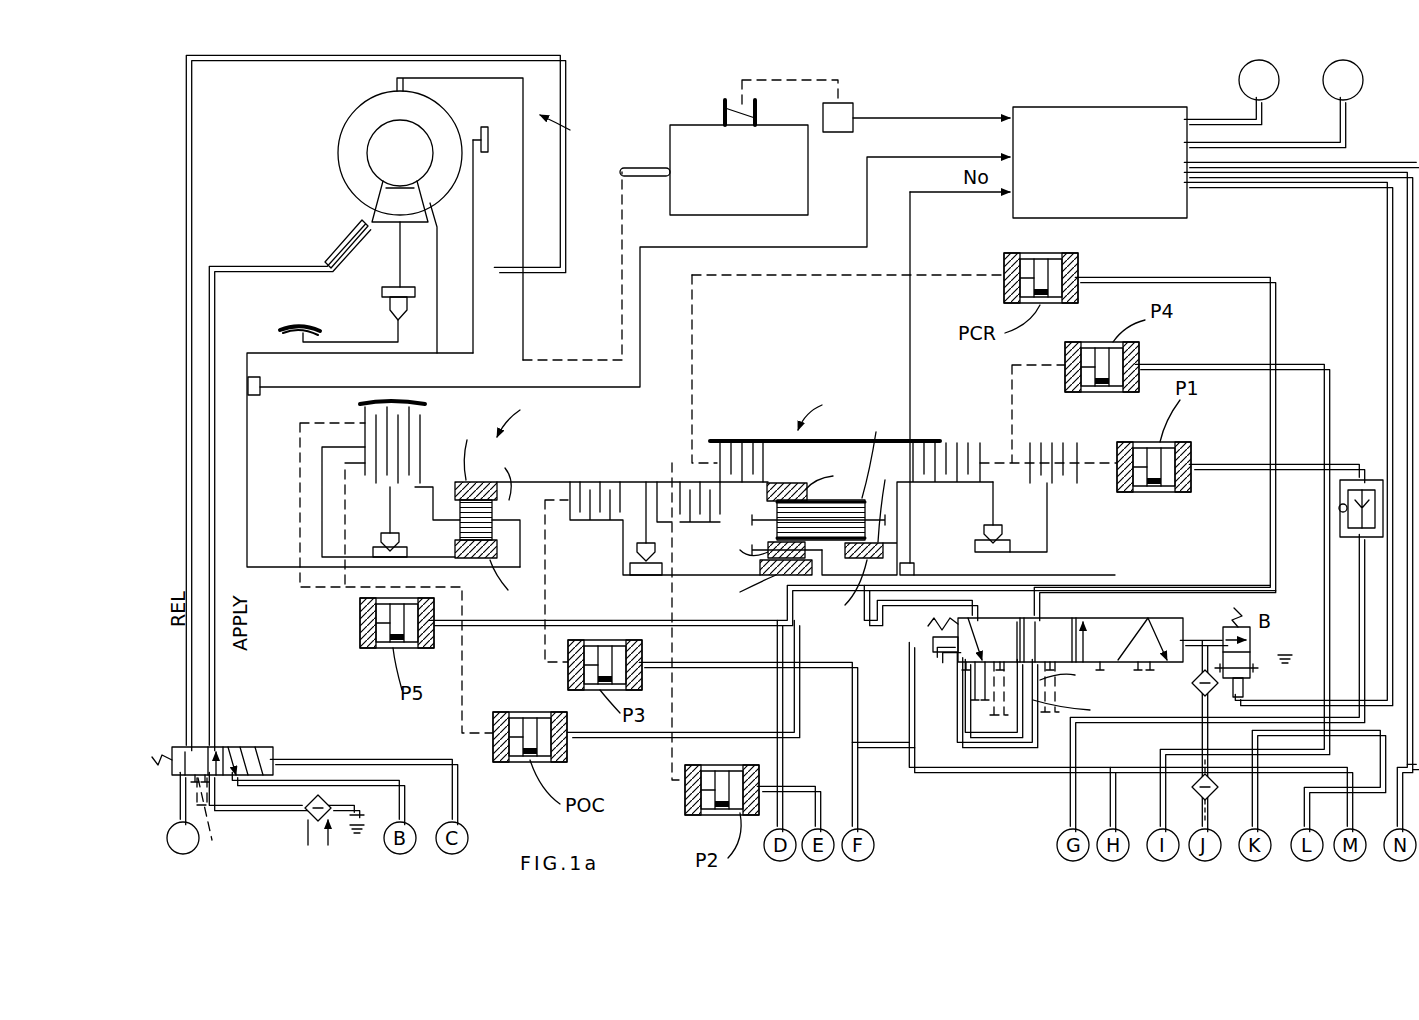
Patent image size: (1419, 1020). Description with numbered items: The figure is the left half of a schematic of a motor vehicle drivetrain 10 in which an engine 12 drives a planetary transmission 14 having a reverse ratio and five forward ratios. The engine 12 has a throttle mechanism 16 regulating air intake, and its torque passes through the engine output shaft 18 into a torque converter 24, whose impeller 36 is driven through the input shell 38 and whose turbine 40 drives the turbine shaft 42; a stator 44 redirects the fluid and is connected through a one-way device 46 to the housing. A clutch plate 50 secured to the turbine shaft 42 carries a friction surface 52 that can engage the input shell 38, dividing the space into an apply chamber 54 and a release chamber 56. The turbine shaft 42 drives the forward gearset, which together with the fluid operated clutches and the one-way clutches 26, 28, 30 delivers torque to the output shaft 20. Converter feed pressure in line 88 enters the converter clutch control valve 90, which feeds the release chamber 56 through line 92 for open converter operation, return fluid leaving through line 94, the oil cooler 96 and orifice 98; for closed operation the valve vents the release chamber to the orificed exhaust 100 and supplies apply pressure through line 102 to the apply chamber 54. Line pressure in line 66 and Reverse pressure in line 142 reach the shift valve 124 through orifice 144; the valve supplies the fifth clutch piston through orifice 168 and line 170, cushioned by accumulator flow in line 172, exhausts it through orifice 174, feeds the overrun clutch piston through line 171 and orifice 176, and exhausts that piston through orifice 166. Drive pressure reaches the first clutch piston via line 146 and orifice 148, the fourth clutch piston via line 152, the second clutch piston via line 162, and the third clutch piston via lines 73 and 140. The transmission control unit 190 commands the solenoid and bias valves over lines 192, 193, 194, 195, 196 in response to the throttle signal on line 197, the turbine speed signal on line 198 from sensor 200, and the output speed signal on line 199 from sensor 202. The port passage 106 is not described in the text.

The motor vehicle drivetrain 10 is at (882, 92).
The engine 12 is at (668, 150).
The planetary transmission 14 is at (700, 410).
The throttle mechanism 16 is at (724, 108).
The engine output shaft 18 is at (655, 178).
The output shaft 20 is at (1112, 572).
The torque converter 24 is at (296, 145).
The one-way clutch 26 is at (385, 560).
The one-way clutch 28 is at (645, 575).
The one-way clutch 30 is at (982, 542).
The impeller 36 is at (343, 170).
The input shell 38 is at (540, 100).
The turbine 40 is at (440, 123).
The turbine shaft 42 is at (262, 385).
The stator member 44 is at (372, 215).
The one-way device 46 is at (385, 312).
The clutch plate 50 is at (473, 185).
The friction surface 52 is at (498, 140).
The apply chamber 54 is at (453, 260).
The release chamber 56 is at (535, 235).
The pump output line 66 is at (1258, 820).
The line 73 is at (865, 815).
The converter feed line 88 is at (172, 830).
The TCC Control Valve 90 is at (222, 745).
The release line 92 is at (176, 560).
The return line 94 is at (218, 570).
The oil cooler 96 is at (305, 825).
The orifice 98 is at (365, 832).
The orificed exhaust 100 is at (223, 825).
The TCC apply line 102 is at (350, 780).
The passage to port C 106 is at (458, 800).
The Shift Valve 124 is at (1152, 615).
The line 140 is at (845, 680).
The line 142 is at (960, 768).
The orifice 144 is at (1075, 676).
The line 146 is at (1070, 815).
The orifice 148 is at (1362, 490).
The line 152 is at (1160, 810).
The line 162 is at (805, 785).
The orifice 166 is at (1045, 675).
The orifice 168 is at (970, 672).
The line 170 is at (865, 640).
The line 171 is at (785, 610).
The line 172 is at (778, 680).
The orifice 174 is at (980, 680).
The orifice 176 is at (1092, 710).
The Transmission Control Unit 190 is at (1135, 220).
The control line 192 is at (1340, 163).
The control line 193 is at (1328, 188).
The control line 194 is at (1298, 180).
The control line 195 is at (1296, 138).
The control line 196 is at (1212, 118).
The throttle signal line 197 is at (940, 117).
The turbine speed signal line 198 is at (820, 178).
The output speed signal line 199 is at (920, 212).
The turbine speed sensor 200 is at (262, 395).
The output speed sensor 202 is at (918, 567).